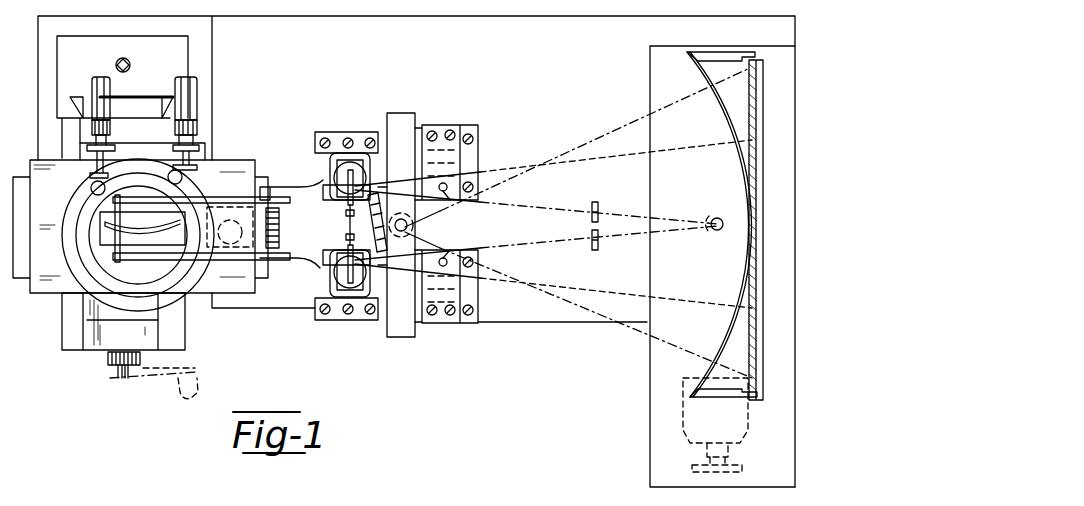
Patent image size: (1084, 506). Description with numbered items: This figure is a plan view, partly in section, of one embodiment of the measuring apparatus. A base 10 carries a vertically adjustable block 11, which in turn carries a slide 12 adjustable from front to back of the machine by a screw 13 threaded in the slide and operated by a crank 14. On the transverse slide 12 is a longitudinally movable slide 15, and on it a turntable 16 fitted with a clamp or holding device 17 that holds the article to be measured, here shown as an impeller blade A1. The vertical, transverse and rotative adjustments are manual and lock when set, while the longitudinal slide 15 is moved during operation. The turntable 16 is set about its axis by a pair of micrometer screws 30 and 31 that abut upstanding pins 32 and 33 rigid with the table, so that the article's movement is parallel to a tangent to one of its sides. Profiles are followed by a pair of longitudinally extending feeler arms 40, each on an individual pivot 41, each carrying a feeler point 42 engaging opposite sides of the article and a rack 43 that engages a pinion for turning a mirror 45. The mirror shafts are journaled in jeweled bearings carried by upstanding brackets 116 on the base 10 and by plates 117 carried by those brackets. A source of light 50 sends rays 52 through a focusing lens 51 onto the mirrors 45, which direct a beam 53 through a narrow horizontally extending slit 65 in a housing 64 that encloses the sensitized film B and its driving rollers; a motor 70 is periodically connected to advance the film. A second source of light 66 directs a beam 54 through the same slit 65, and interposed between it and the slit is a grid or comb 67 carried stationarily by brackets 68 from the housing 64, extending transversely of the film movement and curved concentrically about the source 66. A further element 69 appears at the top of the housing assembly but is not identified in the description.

The base 10 is at (409, 55).
The vertically adjustable block 11 is at (147, 107).
The slide 12 is at (153, 315).
The screw 13 is at (116, 374).
The crank 14 is at (200, 382).
The longitudinally movable slide 15 is at (50, 282).
The turntable 16 is at (90, 205).
The clamp or holding device 17 is at (105, 233).
The micrometer screw 30 is at (95, 95).
The micrometer screw 31 is at (190, 108).
The upstanding pin 32 is at (91, 186).
The upstanding pin 33 is at (183, 173).
The feeler arm 40 is at (275, 190).
The pivot 41 is at (452, 248).
The feeler point 42 is at (113, 207).
The rack 43 is at (350, 236).
The mirror 45 is at (326, 176).
The source of light 50 is at (713, 218).
The focusing lens 51 is at (596, 204).
The rays 52 is at (640, 220).
The beam 53 is at (640, 157).
The beam 54 is at (626, 122).
The housing 64 is at (652, 413).
The slit 65 is at (750, 346).
The second source of light 66 is at (401, 225).
The grid or comb 67 is at (722, 163).
The brackets 68 is at (762, 400).
The upper bracket 69 is at (727, 52).
The motor 70 is at (750, 408).
The upstanding brackets 116 is at (328, 133).
The plates 117 is at (358, 132).
The impeller blade A1 is at (142, 225).
The film B is at (750, 322).